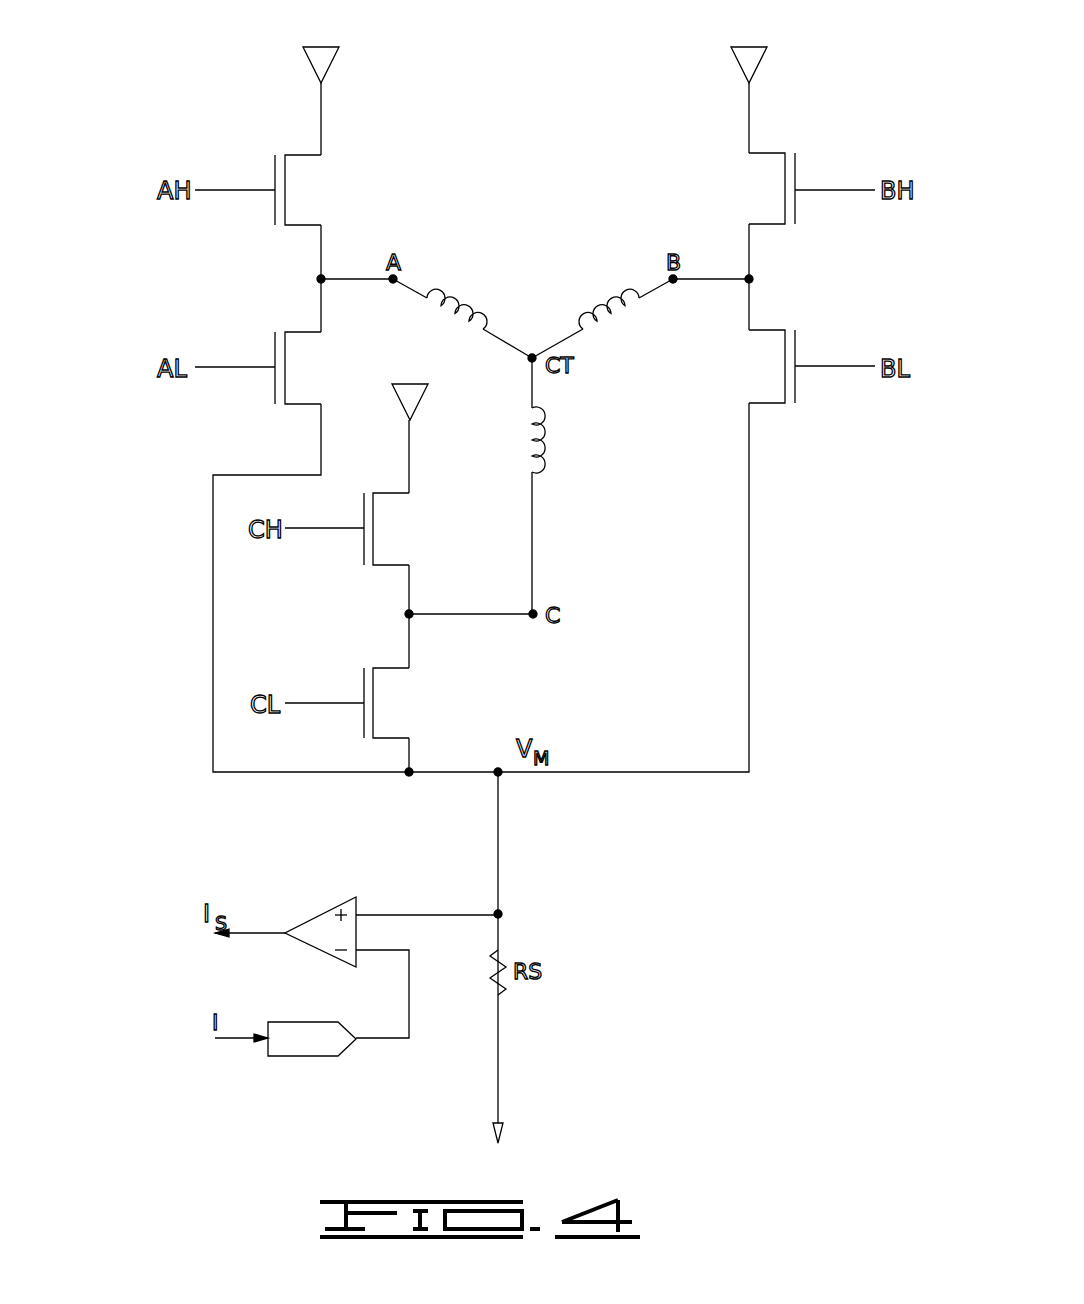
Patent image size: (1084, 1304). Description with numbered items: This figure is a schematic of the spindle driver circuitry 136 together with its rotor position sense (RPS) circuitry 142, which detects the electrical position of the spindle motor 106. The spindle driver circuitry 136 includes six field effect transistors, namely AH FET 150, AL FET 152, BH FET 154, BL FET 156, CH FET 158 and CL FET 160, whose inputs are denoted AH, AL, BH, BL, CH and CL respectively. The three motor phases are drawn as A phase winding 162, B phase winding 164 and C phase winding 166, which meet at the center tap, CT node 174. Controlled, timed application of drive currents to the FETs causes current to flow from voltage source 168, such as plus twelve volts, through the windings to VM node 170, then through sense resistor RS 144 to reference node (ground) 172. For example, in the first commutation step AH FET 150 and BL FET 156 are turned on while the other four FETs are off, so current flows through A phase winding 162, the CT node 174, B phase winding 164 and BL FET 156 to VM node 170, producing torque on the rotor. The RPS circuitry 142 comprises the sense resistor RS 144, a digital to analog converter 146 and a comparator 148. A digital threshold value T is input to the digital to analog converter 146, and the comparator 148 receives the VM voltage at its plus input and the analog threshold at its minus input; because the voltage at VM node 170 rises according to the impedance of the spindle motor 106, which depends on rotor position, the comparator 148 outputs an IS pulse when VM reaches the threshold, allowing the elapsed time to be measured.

The spindle driver circuitry 136 is at (258, 50).
The voltage source 168 is at (320, 47).
The AH FET 150 is at (275, 170).
The AL FET 152 is at (275, 355).
The BH FET 154 is at (795, 170).
The BL FET 156 is at (795, 388).
The CH FET 158 is at (364, 548).
The CL FET 160 is at (364, 722).
The spindle motor 106 is at (523, 272).
The A phase winding 162 is at (440, 313).
The B phase winding 164 is at (593, 327).
The C phase winding 166 is at (540, 470).
The CT node 174 is at (515, 373).
The VM node 170 is at (498, 755).
The rotor position sense (RPS) circuitry 142 is at (602, 940).
The comparator 148 is at (325, 912).
The digital to analog converter (DAC) 146 is at (315, 1057).
The sense resistor RS 144 is at (505, 990).
The reference node (ground) 172 is at (505, 1135).